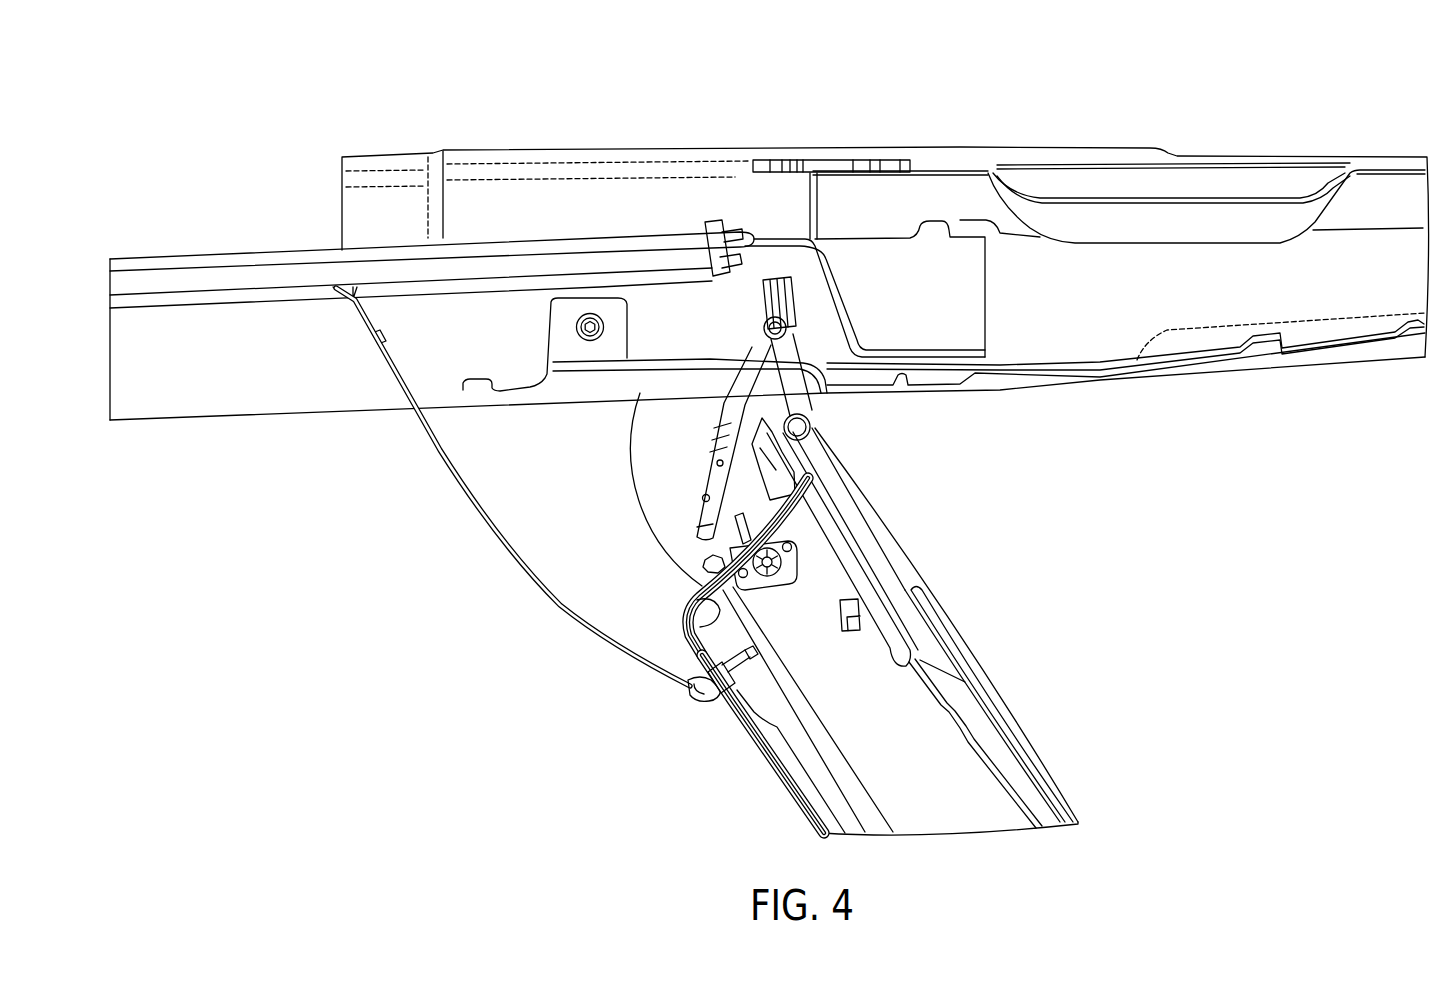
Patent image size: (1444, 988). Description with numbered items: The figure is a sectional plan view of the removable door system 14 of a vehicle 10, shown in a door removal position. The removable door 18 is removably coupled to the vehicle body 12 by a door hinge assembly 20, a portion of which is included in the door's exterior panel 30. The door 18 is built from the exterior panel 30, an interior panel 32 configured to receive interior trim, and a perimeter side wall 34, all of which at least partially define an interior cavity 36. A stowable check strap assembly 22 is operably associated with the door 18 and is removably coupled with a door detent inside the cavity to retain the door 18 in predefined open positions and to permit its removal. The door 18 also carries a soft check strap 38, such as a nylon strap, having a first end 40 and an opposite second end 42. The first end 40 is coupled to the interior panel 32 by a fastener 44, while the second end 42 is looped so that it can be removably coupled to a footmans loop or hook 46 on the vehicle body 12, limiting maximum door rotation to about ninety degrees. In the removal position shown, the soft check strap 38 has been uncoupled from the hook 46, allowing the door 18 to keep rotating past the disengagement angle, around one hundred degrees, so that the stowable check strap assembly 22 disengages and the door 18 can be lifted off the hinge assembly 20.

The vehicle 10 is at (1274, 119).
The body 12 is at (1102, 282).
The removable door system 14 is at (976, 579).
The removable door 18 is at (968, 812).
The door hinge assembly 20 is at (848, 428).
The stowable check strap assembly 22 is at (716, 421).
The exterior panel 30 is at (1016, 735).
The interior panel 32 is at (788, 799).
The perimeter side wall 34 is at (699, 632).
The interior cavity 36 is at (938, 741).
The soft check strap 38 is at (513, 572).
The first end 40 is at (676, 700).
The second end 42 is at (352, 338).
The fastener 44 is at (718, 705).
The hook 46 is at (826, 163).